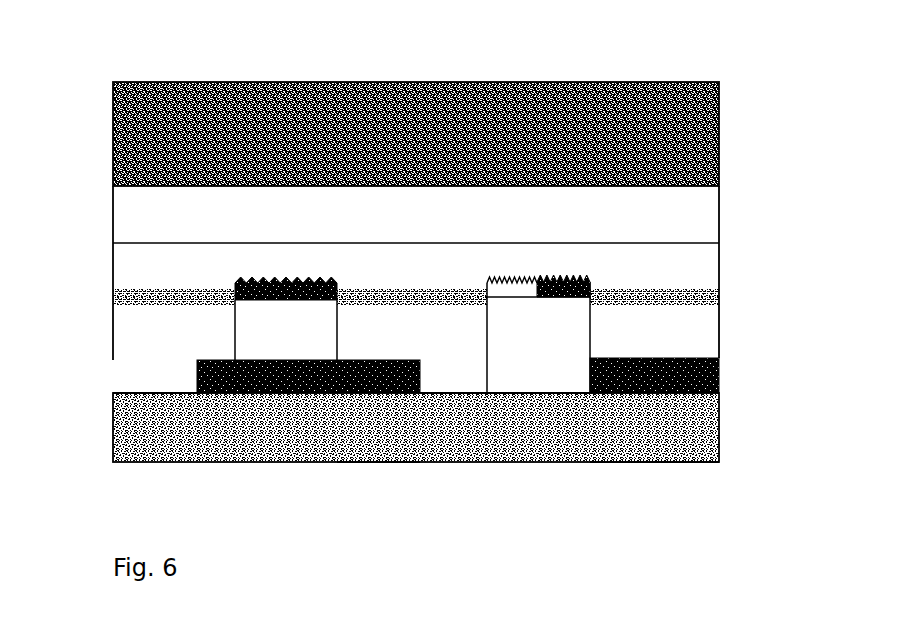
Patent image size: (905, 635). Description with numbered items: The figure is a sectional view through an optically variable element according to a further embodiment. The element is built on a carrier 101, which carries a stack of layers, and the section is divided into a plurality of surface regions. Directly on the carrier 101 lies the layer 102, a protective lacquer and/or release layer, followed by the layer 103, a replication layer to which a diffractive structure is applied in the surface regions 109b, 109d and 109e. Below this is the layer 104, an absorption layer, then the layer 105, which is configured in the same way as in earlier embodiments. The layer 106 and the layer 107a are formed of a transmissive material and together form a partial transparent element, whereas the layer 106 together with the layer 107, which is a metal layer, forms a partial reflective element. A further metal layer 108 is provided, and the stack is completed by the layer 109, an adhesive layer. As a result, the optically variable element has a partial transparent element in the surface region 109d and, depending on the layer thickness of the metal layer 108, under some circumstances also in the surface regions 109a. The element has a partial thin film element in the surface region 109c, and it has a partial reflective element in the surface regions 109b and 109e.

The carrier 101 is at (720, 143).
The protective lacquer and/or release layer 102 is at (118, 231).
The replication layer 103 is at (690, 265).
The absorption layer 104 is at (113, 303).
The layer 105 is at (690, 327).
The layer 106 is at (590, 338).
The metal layer 107 is at (235, 292).
The layer 107a is at (505, 278).
The metal layer 108 is at (719, 388).
The adhesive layer 109 is at (719, 442).
The surface region 109a is at (173, 377).
The surface region 109b is at (285, 345).
The surface region 109c is at (367, 393).
The surface region 109d is at (513, 305).
The surface region 109e is at (567, 323).